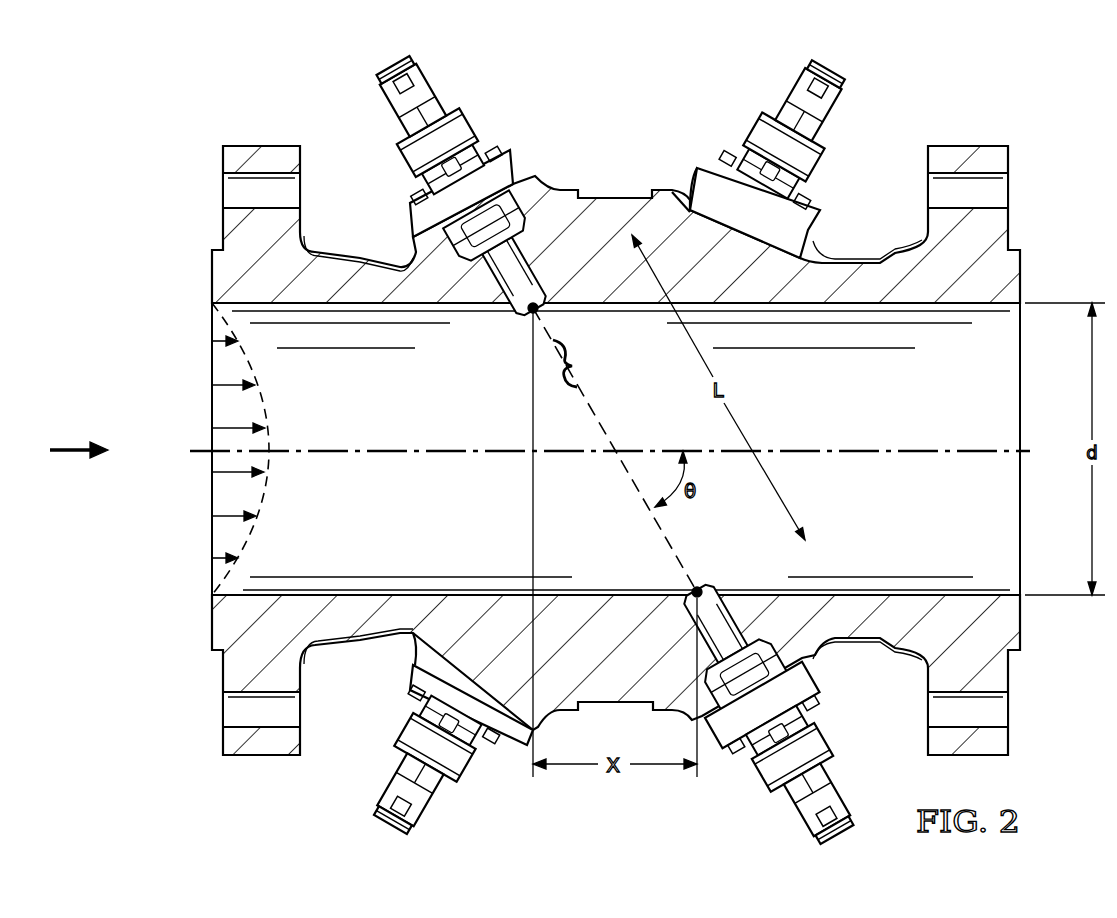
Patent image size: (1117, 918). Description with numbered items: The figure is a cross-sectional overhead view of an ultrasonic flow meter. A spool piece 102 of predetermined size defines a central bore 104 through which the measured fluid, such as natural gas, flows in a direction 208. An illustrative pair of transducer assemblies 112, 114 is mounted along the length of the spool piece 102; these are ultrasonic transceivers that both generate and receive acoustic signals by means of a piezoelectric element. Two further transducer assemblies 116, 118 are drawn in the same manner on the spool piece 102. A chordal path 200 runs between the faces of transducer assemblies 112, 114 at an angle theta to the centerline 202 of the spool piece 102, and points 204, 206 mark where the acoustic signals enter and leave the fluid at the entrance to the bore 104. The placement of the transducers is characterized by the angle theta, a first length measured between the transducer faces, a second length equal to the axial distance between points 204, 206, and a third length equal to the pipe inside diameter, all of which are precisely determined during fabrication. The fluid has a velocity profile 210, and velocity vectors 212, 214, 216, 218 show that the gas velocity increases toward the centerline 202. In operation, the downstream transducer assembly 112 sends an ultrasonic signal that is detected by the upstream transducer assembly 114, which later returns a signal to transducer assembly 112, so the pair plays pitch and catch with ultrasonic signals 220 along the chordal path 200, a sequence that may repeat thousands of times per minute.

The spool piece 102 is at (617, 195).
The central bore 104 is at (826, 403).
The transducer assembly 112 is at (797, 818).
The transducer assembly 114 is at (480, 128).
The ultrasonic transducer 116 is at (430, 820).
The ultrasonic transducer 118 is at (803, 82).
The path 200 is at (660, 538).
The centerline 202 is at (888, 458).
The point 204 is at (700, 587).
The point 206 is at (528, 314).
The direction 208 is at (72, 447).
The velocity profile 210 is at (263, 397).
The velocity vector 212 is at (212, 375).
The velocity vector 214 is at (212, 418).
The velocity vector 216 is at (212, 485).
The velocity vector 218 is at (212, 530).
The ultrasonic signals 220 is at (577, 352).